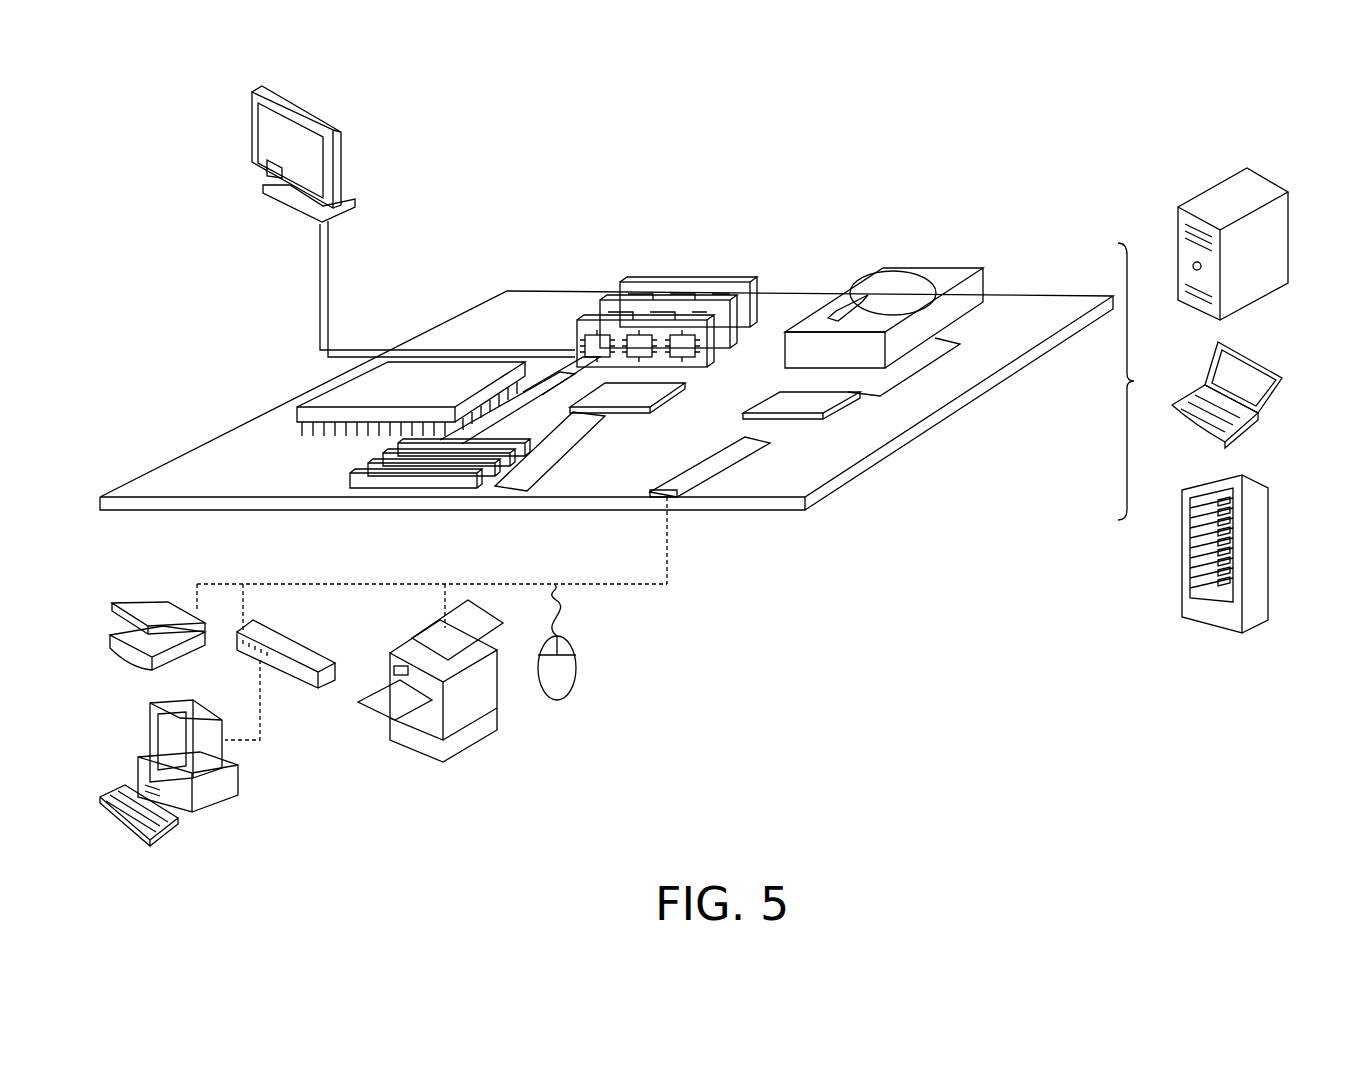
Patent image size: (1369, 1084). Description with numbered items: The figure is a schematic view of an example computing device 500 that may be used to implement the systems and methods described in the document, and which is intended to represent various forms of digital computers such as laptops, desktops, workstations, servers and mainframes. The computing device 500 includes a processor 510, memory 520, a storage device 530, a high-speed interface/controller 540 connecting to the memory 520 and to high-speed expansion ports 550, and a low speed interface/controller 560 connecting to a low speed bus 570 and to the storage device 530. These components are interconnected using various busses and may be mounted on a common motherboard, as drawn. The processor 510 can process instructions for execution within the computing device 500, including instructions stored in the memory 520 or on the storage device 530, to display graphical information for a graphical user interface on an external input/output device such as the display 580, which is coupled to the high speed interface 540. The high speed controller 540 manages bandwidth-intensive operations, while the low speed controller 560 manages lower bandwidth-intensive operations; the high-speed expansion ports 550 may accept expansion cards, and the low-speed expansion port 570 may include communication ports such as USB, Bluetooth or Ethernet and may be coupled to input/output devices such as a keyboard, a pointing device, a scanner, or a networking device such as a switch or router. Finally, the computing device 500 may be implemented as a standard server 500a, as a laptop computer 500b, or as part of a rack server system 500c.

The computing device 500 is at (760, 154).
The processor 510 is at (297, 409).
The memory 520 is at (683, 283).
The storage device 530 is at (928, 267).
The high-speed interface/controller 540 is at (633, 416).
The high-speed expansion ports 550 is at (350, 478).
The low speed interface/controller 560 is at (792, 396).
The low speed bus 570 is at (682, 507).
The display 580 is at (250, 133).
The standard server 500a is at (1205, 190).
The laptop computer 500b is at (1258, 361).
The rack server system 500c is at (1263, 535).